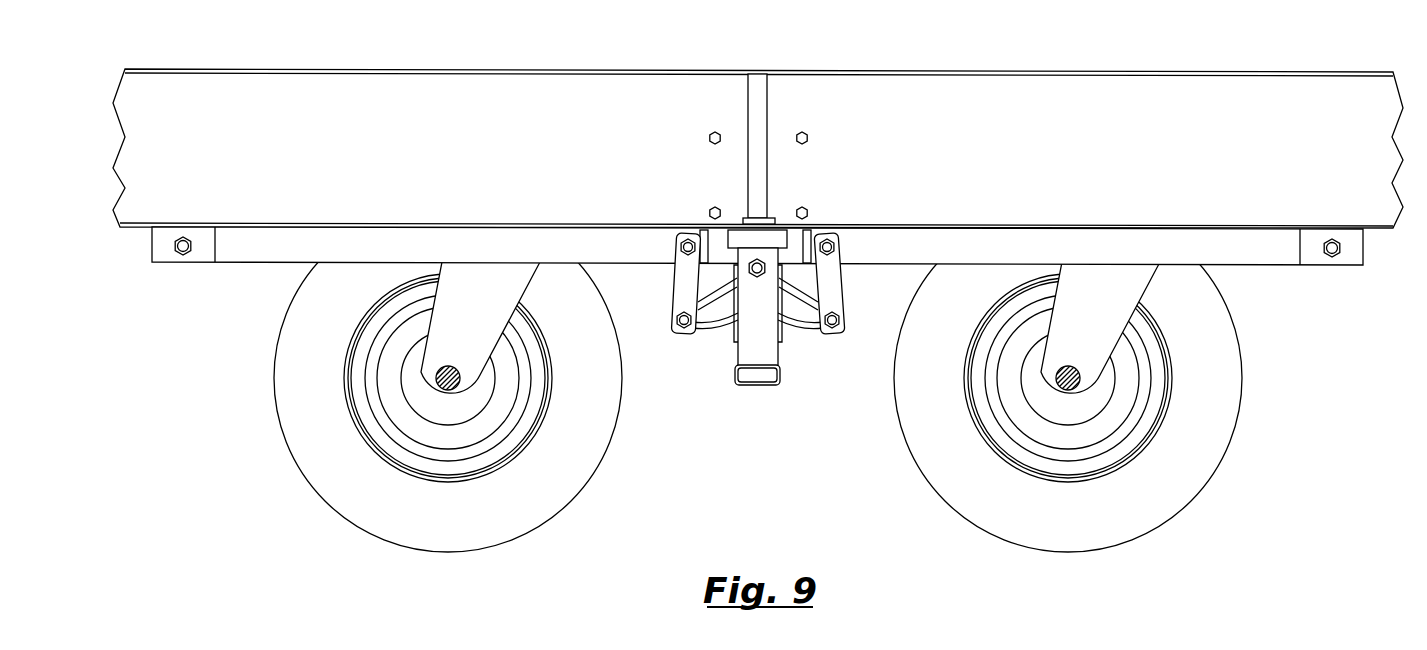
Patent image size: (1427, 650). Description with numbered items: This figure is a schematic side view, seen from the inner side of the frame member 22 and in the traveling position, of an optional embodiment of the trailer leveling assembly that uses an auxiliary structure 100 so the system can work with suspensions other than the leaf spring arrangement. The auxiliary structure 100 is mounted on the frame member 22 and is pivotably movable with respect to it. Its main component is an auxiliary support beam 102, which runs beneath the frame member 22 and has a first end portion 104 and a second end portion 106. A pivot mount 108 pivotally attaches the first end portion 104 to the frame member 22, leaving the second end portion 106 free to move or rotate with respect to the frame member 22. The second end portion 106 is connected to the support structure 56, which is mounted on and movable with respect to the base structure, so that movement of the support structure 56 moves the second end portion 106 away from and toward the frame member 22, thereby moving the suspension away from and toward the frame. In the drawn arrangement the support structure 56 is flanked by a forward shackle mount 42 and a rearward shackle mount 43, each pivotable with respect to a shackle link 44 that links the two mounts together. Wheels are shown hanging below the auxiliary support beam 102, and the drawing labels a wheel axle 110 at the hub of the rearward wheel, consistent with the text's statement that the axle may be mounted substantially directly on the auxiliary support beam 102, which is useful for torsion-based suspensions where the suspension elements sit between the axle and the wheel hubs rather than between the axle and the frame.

The frame member 22 is at (1062, 130).
The forward shackle mount 42 is at (690, 287).
The rearward shackle mount 43 is at (829, 283).
The shackle link 44 is at (718, 305).
The support structure 56 is at (760, 338).
The auxiliary structure 100 is at (1114, 203).
The auxiliary support beam 102 is at (1207, 250).
The first end portion 104 is at (1277, 250).
The second end portion 106 is at (847, 247).
The pivot mount 108 is at (1340, 258).
The wheel axle 110 is at (1057, 385).